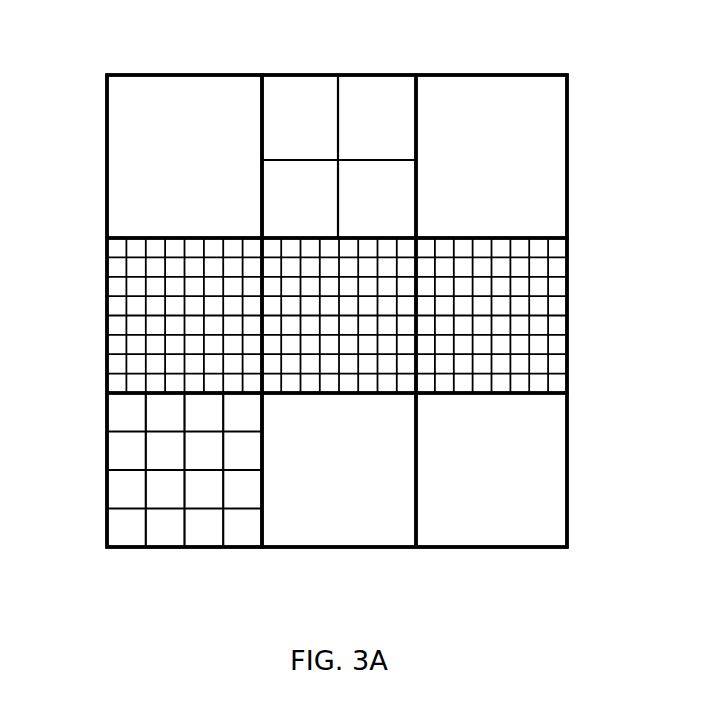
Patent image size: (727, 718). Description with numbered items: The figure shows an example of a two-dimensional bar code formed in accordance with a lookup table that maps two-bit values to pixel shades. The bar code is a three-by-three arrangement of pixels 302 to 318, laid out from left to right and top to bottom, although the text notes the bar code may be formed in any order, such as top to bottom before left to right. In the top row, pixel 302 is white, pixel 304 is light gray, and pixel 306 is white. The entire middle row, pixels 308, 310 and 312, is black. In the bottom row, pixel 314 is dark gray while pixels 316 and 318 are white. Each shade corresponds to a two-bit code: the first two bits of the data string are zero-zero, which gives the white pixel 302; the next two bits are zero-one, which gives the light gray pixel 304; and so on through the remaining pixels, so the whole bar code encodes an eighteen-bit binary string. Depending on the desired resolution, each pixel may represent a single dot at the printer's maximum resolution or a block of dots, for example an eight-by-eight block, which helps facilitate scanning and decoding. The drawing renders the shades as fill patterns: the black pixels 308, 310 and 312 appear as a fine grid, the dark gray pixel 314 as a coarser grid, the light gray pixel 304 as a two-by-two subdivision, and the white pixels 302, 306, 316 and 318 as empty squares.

The pixel 302 is at (175, 75).
The pixel 304 is at (328, 75).
The pixel 306 is at (482, 75).
The pixel 308 is at (107, 325).
The pixel 310 is at (328, 393).
The pixel 312 is at (567, 323).
The pixel 314 is at (176, 547).
The pixel 316 is at (328, 547).
The pixel 318 is at (482, 547).